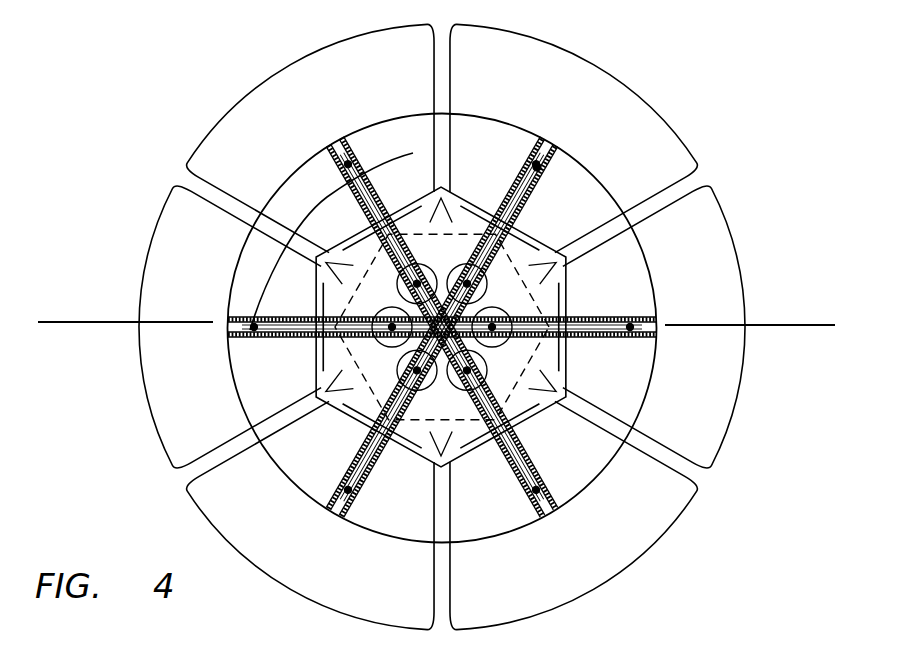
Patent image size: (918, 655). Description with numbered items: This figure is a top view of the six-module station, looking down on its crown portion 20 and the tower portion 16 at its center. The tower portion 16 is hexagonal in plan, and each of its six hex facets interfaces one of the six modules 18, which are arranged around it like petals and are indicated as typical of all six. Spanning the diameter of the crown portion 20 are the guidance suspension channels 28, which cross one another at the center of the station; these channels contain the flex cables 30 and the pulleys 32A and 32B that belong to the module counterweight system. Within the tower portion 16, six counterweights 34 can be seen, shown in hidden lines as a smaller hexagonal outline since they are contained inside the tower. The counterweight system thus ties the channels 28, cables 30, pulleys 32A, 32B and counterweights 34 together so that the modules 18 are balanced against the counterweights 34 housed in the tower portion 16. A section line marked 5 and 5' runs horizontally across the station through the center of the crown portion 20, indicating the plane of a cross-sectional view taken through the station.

The section line 5-5' 5 is at (125, 362).
The section line 5- 5' is at (750, 364).
The tower portion 16 is at (566, 302).
The module 18 is at (516, 73).
The crown portion 20 is at (598, 477).
The guidance suspension channel 28 is at (540, 182).
The flex cable 30 is at (540, 216).
The pulley 32A is at (533, 170).
The pulley 32B is at (432, 268).
The counterweight 34 is at (535, 352).